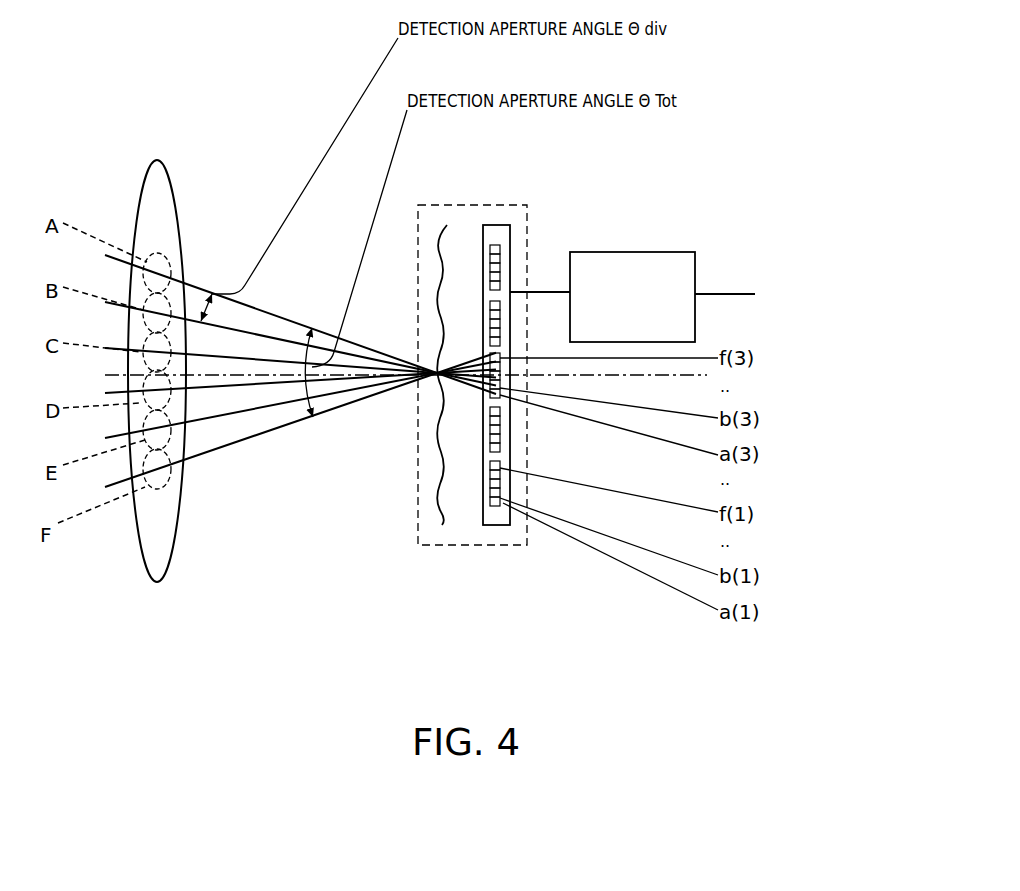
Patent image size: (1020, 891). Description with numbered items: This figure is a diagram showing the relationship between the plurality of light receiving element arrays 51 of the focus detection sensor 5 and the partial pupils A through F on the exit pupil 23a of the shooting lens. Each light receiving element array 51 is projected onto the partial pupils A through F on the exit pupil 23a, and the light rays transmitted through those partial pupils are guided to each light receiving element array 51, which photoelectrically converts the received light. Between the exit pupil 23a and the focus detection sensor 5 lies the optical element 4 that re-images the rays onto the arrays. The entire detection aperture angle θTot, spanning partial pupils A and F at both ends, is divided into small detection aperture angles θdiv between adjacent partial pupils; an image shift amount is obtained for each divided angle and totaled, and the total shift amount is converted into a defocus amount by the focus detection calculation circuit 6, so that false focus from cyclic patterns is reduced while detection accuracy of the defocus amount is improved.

The exit pupil 23a is at (162, 158).
The re-imaging optical system 4 is at (465, 230).
The focus detection sensor 5 is at (538, 328).
The light receiving element array 51 is at (503, 248).
The focus detection calculation circuit 6 is at (636, 252).